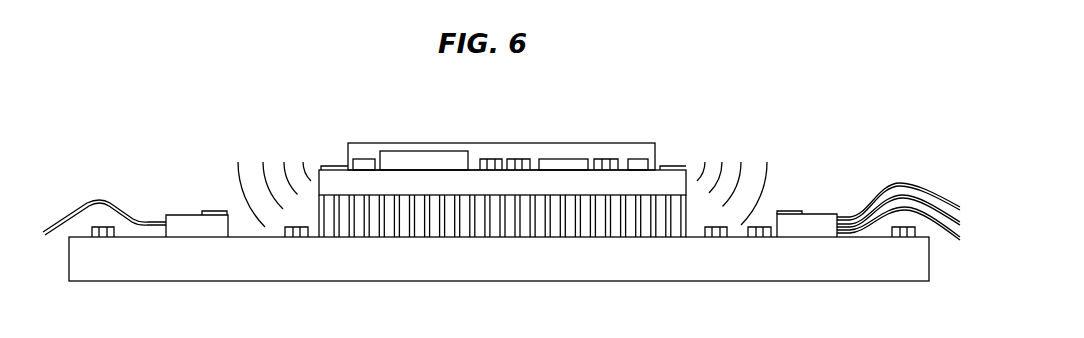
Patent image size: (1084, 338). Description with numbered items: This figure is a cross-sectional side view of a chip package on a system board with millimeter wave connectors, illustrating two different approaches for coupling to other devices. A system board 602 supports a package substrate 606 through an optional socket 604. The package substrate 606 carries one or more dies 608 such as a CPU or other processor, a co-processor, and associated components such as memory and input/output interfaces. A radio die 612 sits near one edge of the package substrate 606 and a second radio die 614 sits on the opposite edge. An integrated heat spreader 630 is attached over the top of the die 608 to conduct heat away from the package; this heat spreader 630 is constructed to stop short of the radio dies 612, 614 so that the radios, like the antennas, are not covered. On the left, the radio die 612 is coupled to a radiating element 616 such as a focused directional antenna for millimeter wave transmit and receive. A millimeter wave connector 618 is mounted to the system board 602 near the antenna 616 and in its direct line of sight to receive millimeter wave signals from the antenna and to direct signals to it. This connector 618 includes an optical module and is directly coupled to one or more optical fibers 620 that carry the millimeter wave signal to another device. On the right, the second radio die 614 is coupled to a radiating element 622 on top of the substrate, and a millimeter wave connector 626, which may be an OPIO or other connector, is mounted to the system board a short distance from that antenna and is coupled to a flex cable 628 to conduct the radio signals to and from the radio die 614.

The system board 602 is at (788, 270).
The socket 604 is at (377, 222).
The package substrate 606 is at (630, 185).
The die 608 is at (430, 151).
The radio die 612 is at (360, 158).
The second radio die 614 is at (646, 159).
The radiating element 616 is at (328, 165).
The millimeter wave connector 618 is at (183, 213).
The optical fibers 620 is at (72, 208).
The radiating element 622 is at (688, 165).
The millimeter wave connector 626 is at (813, 213).
The flex cable 628 is at (934, 190).
The integrated heat spreader 630 is at (590, 143).